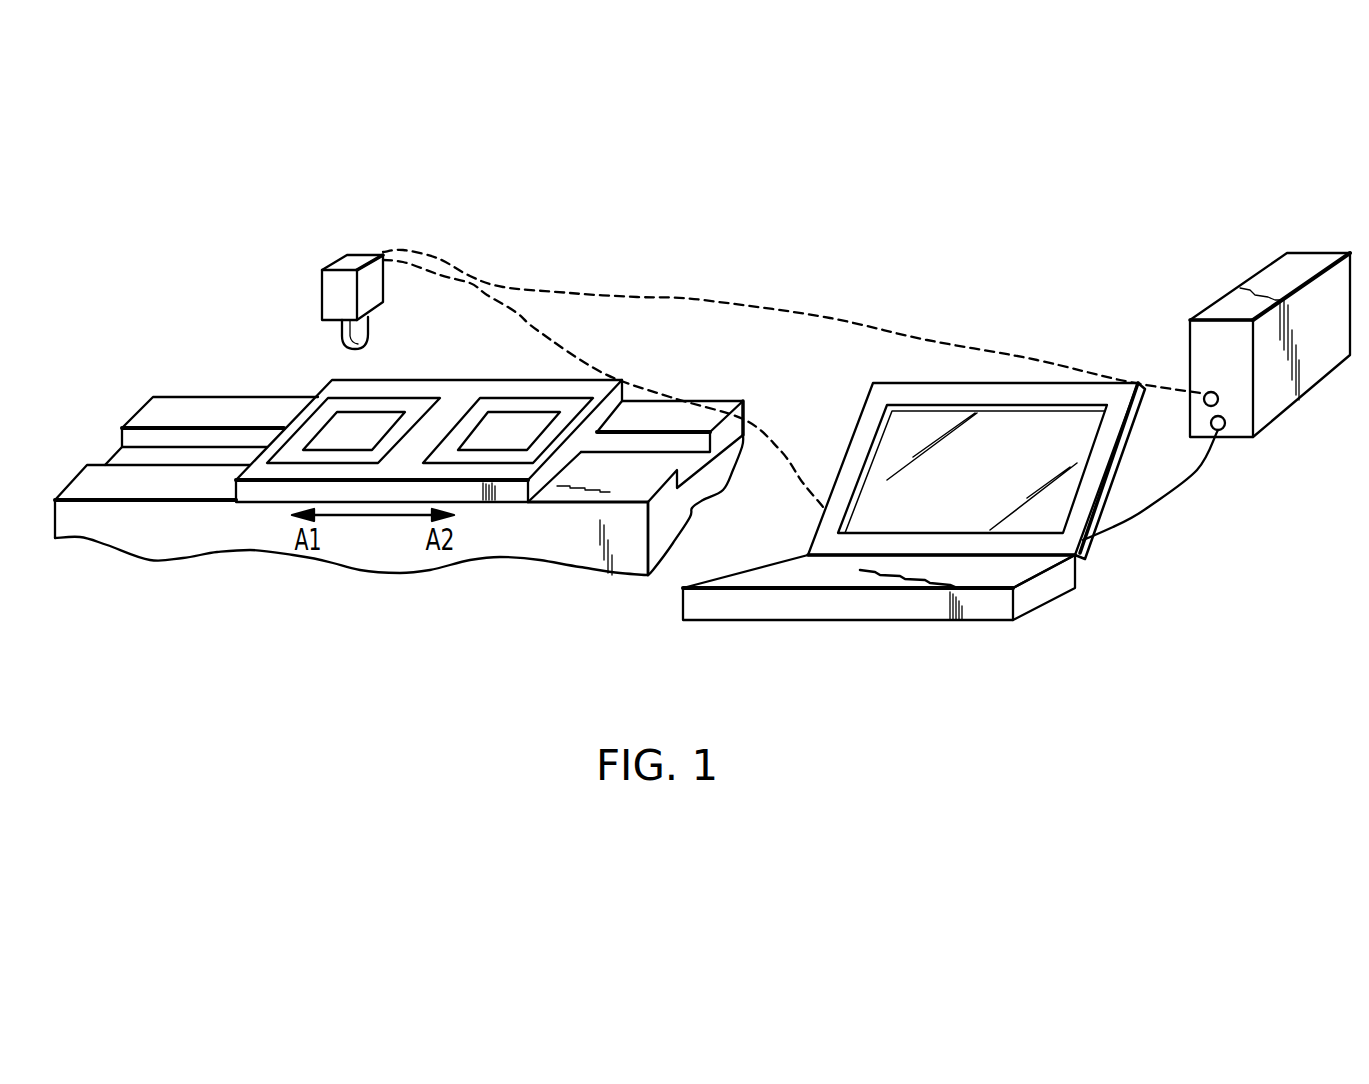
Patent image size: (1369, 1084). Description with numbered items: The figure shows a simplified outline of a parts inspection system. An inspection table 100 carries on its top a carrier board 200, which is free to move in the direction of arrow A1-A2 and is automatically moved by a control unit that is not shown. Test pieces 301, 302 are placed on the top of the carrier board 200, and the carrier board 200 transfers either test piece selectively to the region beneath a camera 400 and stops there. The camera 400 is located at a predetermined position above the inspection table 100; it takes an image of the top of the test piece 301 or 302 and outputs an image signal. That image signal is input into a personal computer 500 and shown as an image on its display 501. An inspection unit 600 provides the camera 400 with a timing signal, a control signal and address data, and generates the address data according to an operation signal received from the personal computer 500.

The inspection table 100 is at (133, 404).
The carrier board 200 is at (263, 490).
The test piece 301 is at (335, 430).
The test piece 302 is at (517, 425).
The camera 400 is at (322, 290).
The personal computer 500 is at (855, 610).
The display 501 is at (870, 405).
The inspection unit 600 is at (1310, 387).